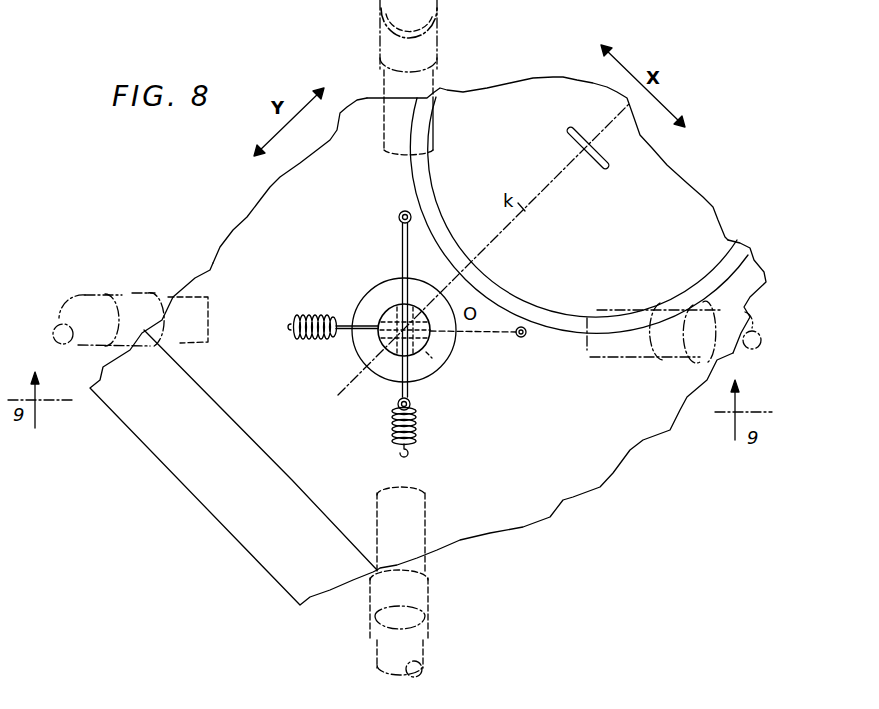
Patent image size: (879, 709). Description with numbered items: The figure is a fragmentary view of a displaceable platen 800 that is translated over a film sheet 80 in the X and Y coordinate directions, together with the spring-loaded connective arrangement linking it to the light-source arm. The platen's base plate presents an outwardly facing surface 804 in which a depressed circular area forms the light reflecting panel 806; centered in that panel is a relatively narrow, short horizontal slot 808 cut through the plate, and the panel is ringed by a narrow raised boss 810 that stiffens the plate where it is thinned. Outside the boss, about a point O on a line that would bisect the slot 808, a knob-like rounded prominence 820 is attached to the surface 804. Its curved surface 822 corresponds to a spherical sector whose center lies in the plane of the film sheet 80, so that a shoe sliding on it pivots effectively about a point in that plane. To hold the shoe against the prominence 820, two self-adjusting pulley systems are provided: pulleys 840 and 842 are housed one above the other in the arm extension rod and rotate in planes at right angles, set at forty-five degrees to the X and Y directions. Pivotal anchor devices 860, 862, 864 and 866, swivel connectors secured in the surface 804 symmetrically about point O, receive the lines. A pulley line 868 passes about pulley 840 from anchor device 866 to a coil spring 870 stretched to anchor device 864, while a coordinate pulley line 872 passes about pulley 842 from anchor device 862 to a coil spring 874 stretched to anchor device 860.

The film sheet 80 is at (558, 452).
The displaceable platen 800 is at (436, 324).
The outwardly facing surface 804 is at (257, 218).
The light reflecting panel 806 is at (535, 79).
The horizontal slot 808 is at (569, 127).
The boss 810 is at (728, 253).
The rounded prominence 820 is at (391, 278).
The spherical surface 822 is at (375, 300).
The pulley 840 is at (432, 358).
The pulley 842 is at (380, 348).
The pivotal anchor device 860 is at (400, 453).
The pivotal anchor device 862 is at (405, 211).
The pivotal anchor device 864 is at (290, 322).
The pivotal anchor device 866 is at (527, 336).
The pulley line 868 is at (492, 334).
The coil spring 870 is at (302, 337).
The pulley line 872 is at (396, 389).
The coil spring 874 is at (416, 420).